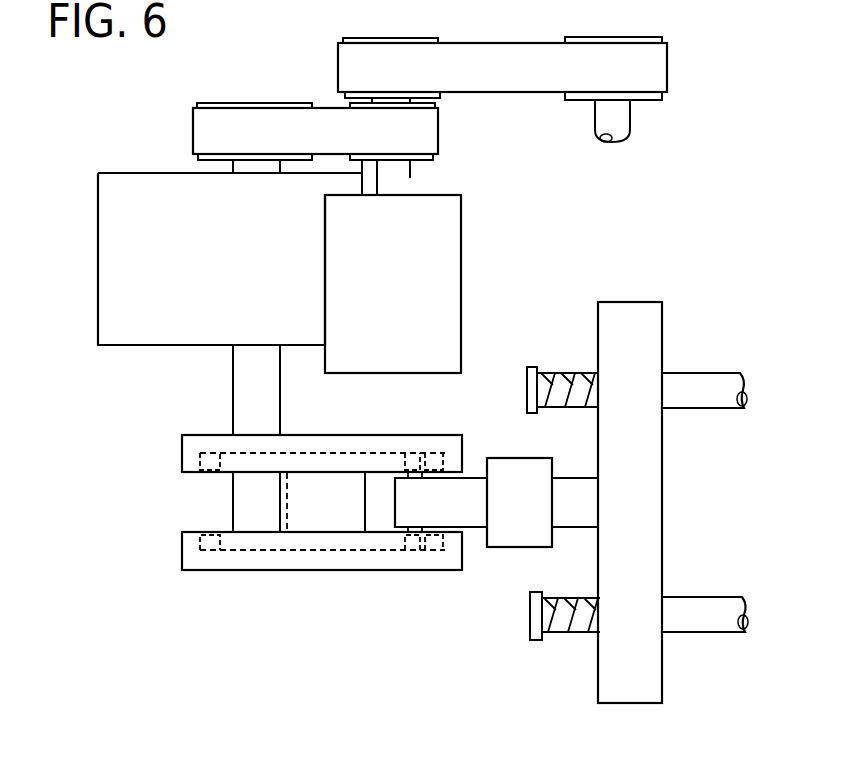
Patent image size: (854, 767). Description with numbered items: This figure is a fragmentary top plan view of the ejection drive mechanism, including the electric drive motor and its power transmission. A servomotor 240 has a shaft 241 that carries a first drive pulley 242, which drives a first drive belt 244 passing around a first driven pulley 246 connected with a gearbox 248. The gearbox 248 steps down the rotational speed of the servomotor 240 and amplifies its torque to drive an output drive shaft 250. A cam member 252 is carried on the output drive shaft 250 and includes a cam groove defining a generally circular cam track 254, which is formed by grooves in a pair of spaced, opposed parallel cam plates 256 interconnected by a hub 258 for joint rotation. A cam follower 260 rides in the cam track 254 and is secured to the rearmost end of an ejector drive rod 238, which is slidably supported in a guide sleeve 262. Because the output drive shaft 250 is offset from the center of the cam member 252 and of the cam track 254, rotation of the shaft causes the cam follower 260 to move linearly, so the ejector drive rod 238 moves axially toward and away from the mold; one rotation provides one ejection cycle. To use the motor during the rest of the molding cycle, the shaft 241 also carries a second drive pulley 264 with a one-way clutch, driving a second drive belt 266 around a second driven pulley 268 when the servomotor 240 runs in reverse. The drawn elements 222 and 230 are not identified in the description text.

The guide rods 222 is at (690, 385).
The mounting plate 230 is at (620, 310).
The ejector drive rod 238 is at (580, 500).
The servomotor 240 is at (413, 285).
The shaft 241 is at (397, 177).
The first drive pulley 242 is at (440, 157).
The first drive belt 244 is at (212, 132).
The first driven pulley 246 is at (218, 105).
The gearbox 248 is at (213, 271).
The output drive shaft 250 is at (250, 383).
The cam member 252 is at (157, 507).
The cam track 254 is at (252, 550).
The cam plates 256 is at (195, 447).
The hub 258 is at (313, 490).
The cam follower 260 is at (410, 550).
The guide sleeve 262 is at (500, 470).
The second drive pulley 264 is at (370, 40).
The second drive belt 266 is at (355, 79).
The second driven pulley 268 is at (637, 100).